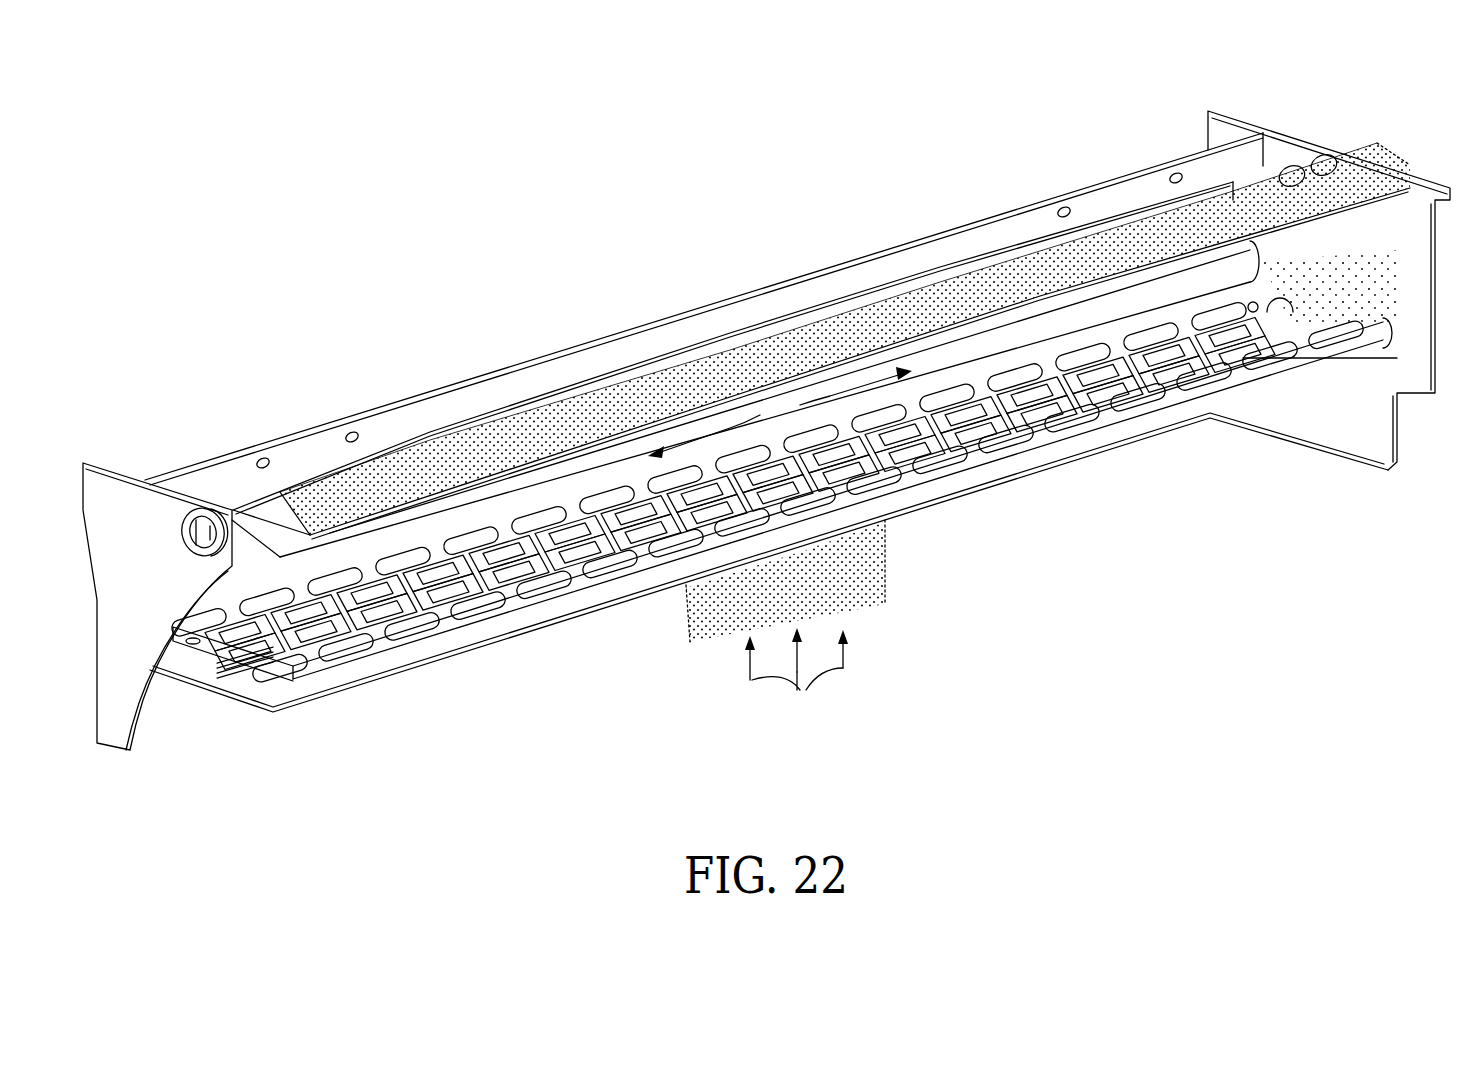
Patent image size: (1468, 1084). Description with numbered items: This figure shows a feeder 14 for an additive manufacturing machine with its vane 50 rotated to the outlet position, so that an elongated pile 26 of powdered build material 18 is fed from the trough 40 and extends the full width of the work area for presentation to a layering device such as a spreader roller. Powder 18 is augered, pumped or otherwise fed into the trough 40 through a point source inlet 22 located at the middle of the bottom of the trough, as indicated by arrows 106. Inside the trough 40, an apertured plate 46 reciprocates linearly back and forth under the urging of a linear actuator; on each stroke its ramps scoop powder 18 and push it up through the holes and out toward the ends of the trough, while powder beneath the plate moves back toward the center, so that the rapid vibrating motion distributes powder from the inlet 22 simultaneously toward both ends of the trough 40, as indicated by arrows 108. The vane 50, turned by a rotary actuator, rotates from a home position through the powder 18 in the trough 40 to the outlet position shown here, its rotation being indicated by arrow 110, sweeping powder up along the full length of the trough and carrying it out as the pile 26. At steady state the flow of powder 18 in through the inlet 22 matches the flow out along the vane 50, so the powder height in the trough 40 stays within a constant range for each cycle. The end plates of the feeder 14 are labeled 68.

The feeder 14 is at (362, 372).
The powdered build material 18 is at (1350, 278).
The point source inlet 22 is at (880, 500).
The elongated pile 26 is at (497, 430).
The trough 40 is at (1243, 262).
The apertured plate 46 is at (446, 634).
The vane 50 is at (283, 527).
The end plate 68 is at (120, 732).
The arrows 106 is at (785, 618).
The arrows 108 is at (780, 412).
The arrow 110 is at (235, 552).